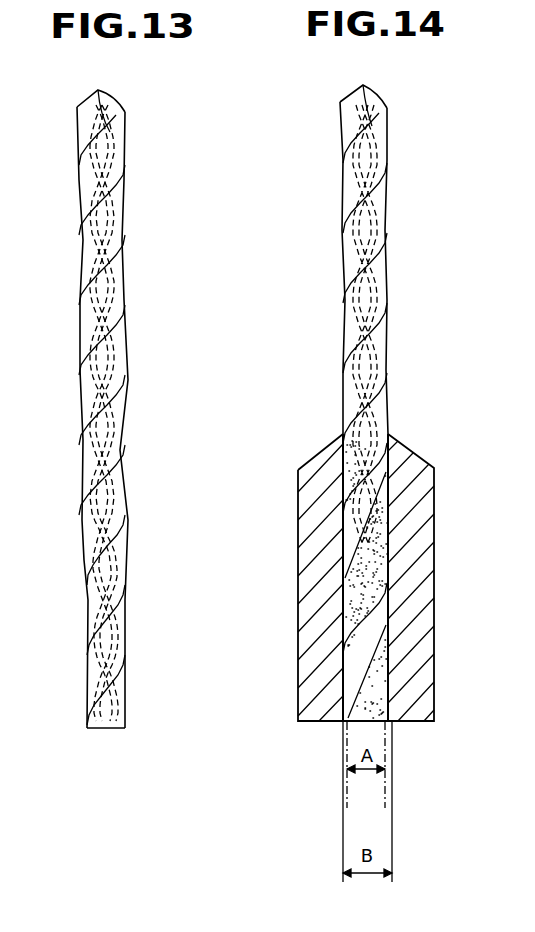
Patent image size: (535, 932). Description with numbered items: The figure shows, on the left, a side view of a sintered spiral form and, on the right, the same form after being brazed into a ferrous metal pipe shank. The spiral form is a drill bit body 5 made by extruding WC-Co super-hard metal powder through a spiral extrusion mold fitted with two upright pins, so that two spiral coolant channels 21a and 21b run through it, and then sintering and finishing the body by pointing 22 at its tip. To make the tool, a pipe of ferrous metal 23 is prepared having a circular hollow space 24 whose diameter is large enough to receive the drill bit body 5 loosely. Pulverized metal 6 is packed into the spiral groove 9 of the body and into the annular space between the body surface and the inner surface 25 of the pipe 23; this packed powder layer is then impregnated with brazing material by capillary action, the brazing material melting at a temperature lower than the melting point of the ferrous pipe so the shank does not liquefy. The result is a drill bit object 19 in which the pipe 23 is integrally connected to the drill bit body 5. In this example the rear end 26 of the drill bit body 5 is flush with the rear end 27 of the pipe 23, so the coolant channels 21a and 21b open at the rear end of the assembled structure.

In FIG. 13, the drill bit body 5 is at (125, 333).
In FIG. 14, the drill bit body 5 is at (393, 162).
In FIG. 13, the pointing 22 is at (103, 102).
In FIG. 14, the pointing 22 is at (373, 101).
In FIG. 13, the spiral coolant channel 21a is at (86, 253).
In FIG. 13, the spiral coolant channel 21b is at (118, 208).
In FIG. 14, the drill bit object 19 is at (405, 368).
In FIG. 14, the pipe of ferrous metal 23 is at (418, 568).
In FIG. 14, the circular hollow space 24 is at (348, 556).
In FIG. 14, the inner surface 25 is at (387, 583).
In FIG. 14, the spiral groove 9 is at (370, 640).
In FIG. 14, the pulverized metal 6 is at (353, 675).
In FIG. 14, the rear end of the drill bit body 26 is at (370, 722).
In FIG. 14, the rear end of the pipe 27 is at (347, 722).